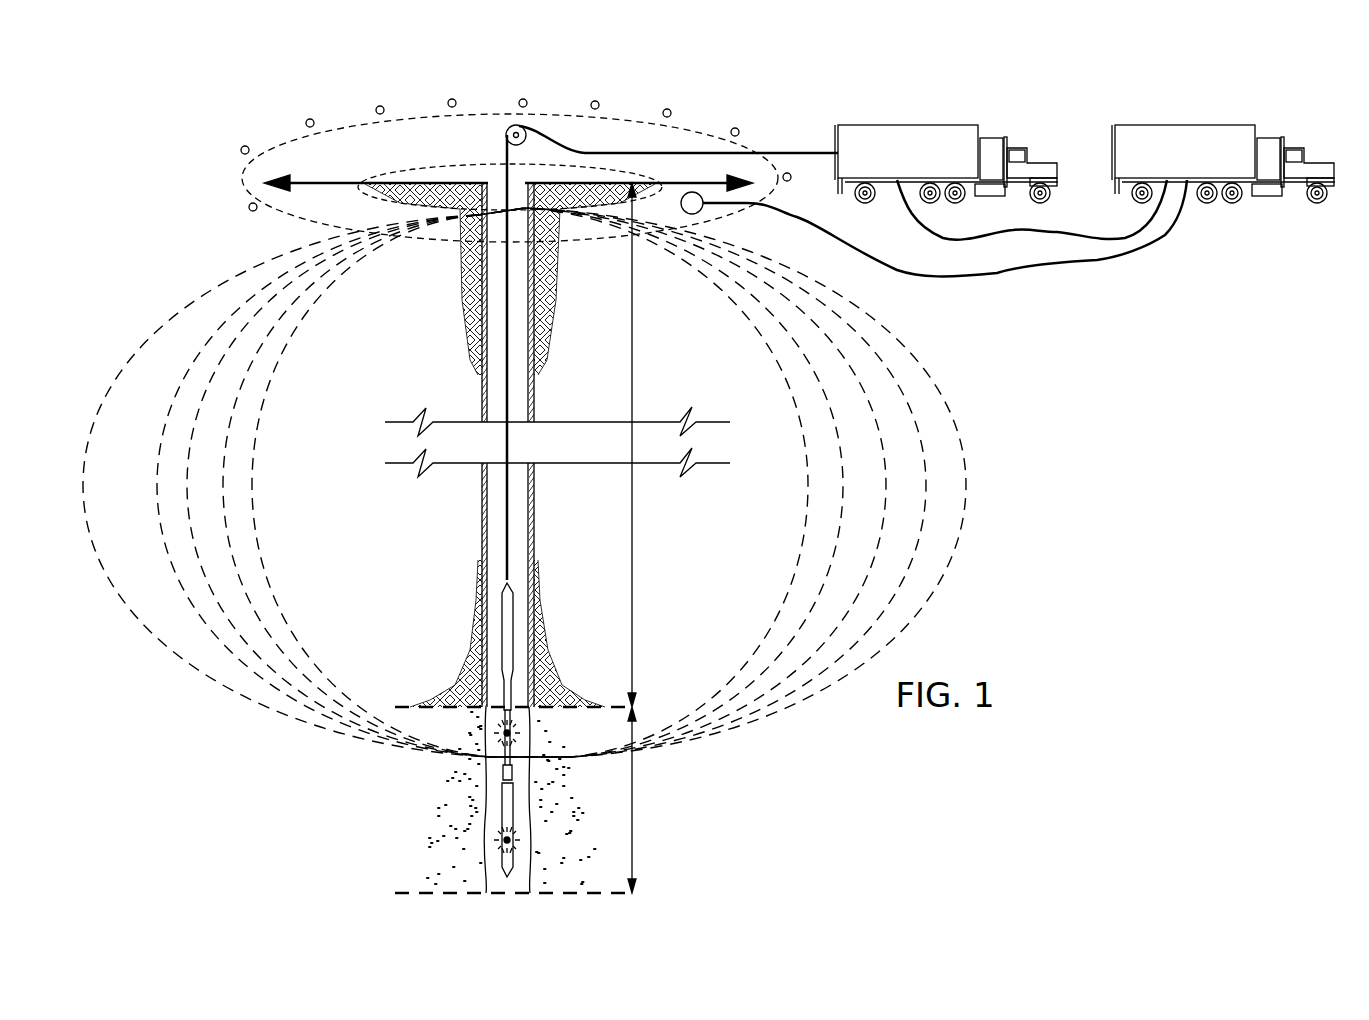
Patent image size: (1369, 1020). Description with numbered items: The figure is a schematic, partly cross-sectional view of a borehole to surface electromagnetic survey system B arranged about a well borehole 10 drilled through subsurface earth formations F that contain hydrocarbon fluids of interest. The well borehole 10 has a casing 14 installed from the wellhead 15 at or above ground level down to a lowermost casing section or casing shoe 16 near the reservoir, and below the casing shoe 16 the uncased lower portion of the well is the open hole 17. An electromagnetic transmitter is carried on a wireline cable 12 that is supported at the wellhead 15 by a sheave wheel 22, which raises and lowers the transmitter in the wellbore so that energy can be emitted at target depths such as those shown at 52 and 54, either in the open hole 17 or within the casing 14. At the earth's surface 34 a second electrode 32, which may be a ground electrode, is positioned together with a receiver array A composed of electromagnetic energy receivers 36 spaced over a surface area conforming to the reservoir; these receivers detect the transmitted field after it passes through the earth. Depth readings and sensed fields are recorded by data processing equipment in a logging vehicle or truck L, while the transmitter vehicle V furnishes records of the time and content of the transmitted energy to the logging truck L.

The well borehole 10 is at (518, 527).
The wireline cable 12 is at (804, 152).
The casing 14 is at (481, 386).
The wellhead 15 is at (488, 182).
The casing shoe 16 is at (540, 700).
The open hole 17 is at (553, 845).
The sheave wheel 22 is at (506, 133).
The electrode 32 is at (703, 212).
The earth's surface 34 is at (349, 183).
The electromagnetic energy receivers 36 is at (241, 150).
The target depth 52 is at (525, 736).
The target depth 54 is at (497, 828).
The receiver array A is at (344, 114).
The borehole to surface electromagnetic survey system B is at (829, 108).
The subsurface earth formations F is at (447, 797).
The logging vehicle or truck L is at (955, 125).
The transmitter vehicle V is at (1232, 125).